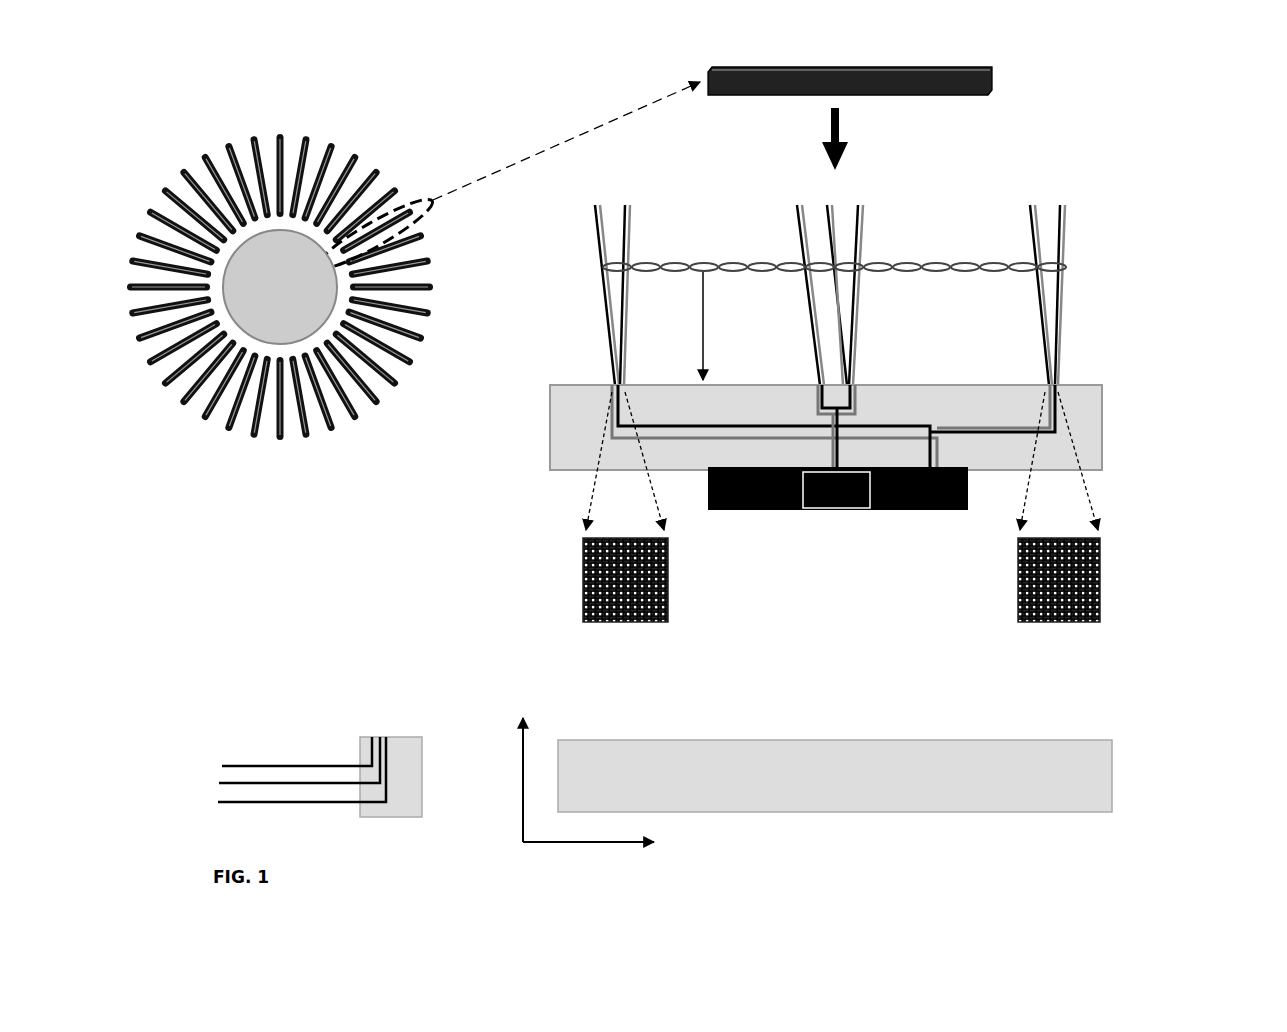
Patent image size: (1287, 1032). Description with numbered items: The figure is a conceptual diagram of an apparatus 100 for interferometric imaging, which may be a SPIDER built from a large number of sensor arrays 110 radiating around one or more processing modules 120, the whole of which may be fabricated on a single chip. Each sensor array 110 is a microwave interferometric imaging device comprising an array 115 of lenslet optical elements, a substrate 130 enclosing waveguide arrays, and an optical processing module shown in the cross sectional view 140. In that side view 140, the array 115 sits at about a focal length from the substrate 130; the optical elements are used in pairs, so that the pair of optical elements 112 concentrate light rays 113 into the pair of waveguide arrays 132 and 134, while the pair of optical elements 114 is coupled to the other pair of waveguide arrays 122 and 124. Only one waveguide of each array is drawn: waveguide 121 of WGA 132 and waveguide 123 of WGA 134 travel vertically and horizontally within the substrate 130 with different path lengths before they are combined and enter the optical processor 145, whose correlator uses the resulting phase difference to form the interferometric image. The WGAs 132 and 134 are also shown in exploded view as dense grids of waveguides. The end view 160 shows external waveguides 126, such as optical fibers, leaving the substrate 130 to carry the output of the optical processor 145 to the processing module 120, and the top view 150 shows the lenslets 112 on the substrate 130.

The apparatus 100 is at (207, 112).
The sensor array 110 is at (410, 203).
The processing module 120 is at (280, 287).
The optical element 112 is at (612, 262).
The light rays 113 is at (1031, 204).
The optical element 114 is at (805, 266).
The array of optical elements 115 is at (753, 250).
The cross sectional view 140 is at (1140, 232).
The waveguide 121 is at (968, 425).
The WGA 122 is at (850, 386).
The waveguide 123 is at (658, 440).
The WGA 124 is at (820, 386).
The substrate 130 is at (1102, 428).
The WGA 132 is at (612, 386).
The WGA 134 is at (1052, 386).
The optical processor 145 is at (838, 488).
The top view of substrate 150 is at (1121, 686).
The end view 160 is at (294, 689).
The external waveguide 126 is at (292, 753).